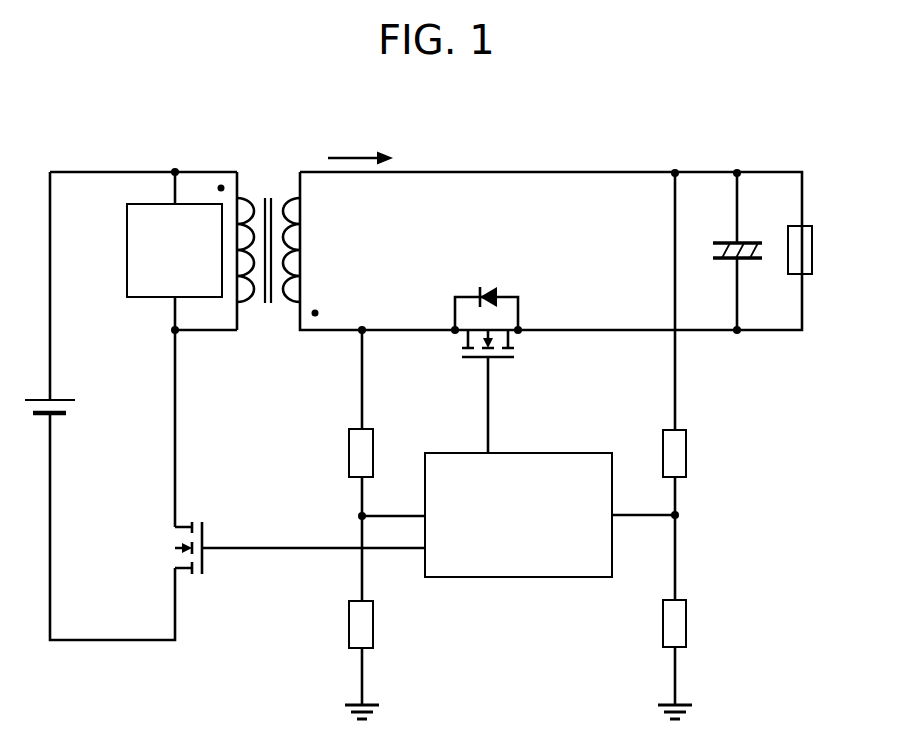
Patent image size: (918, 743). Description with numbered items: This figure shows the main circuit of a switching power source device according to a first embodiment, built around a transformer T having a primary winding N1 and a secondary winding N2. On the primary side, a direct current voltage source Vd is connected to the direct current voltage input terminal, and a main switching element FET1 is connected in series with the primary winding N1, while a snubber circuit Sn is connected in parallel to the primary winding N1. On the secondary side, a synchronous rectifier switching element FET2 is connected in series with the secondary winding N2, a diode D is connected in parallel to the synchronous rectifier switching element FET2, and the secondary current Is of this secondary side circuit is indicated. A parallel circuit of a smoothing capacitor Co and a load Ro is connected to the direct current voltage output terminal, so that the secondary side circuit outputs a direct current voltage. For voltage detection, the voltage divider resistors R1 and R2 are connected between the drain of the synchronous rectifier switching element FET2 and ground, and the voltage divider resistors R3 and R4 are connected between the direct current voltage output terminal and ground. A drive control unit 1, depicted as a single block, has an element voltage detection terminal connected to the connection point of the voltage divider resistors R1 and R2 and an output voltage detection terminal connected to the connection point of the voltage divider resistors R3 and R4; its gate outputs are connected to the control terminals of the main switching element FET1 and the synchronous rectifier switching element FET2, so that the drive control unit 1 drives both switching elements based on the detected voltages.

The drive control unit 1 is at (597, 577).
The snubber circuit Sn is at (174, 236).
The transformer T is at (268, 257).
The primary winding N1 is at (236, 270).
The secondary winding N2 is at (301, 276).
The direct current voltage source Vd is at (59, 396).
The main switching element FET1 is at (210, 533).
The synchronous rectifier switching element FET2 is at (516, 351).
The diode D is at (487, 299).
The smoothing capacitor Co is at (743, 232).
The load Ro is at (814, 240).
The voltage divider resistor R1 is at (376, 444).
The voltage divider resistor R2 is at (376, 615).
The voltage divider resistor R3 is at (689, 445).
The voltage divider resistor R4 is at (689, 615).
The secondary current Is is at (360, 147).